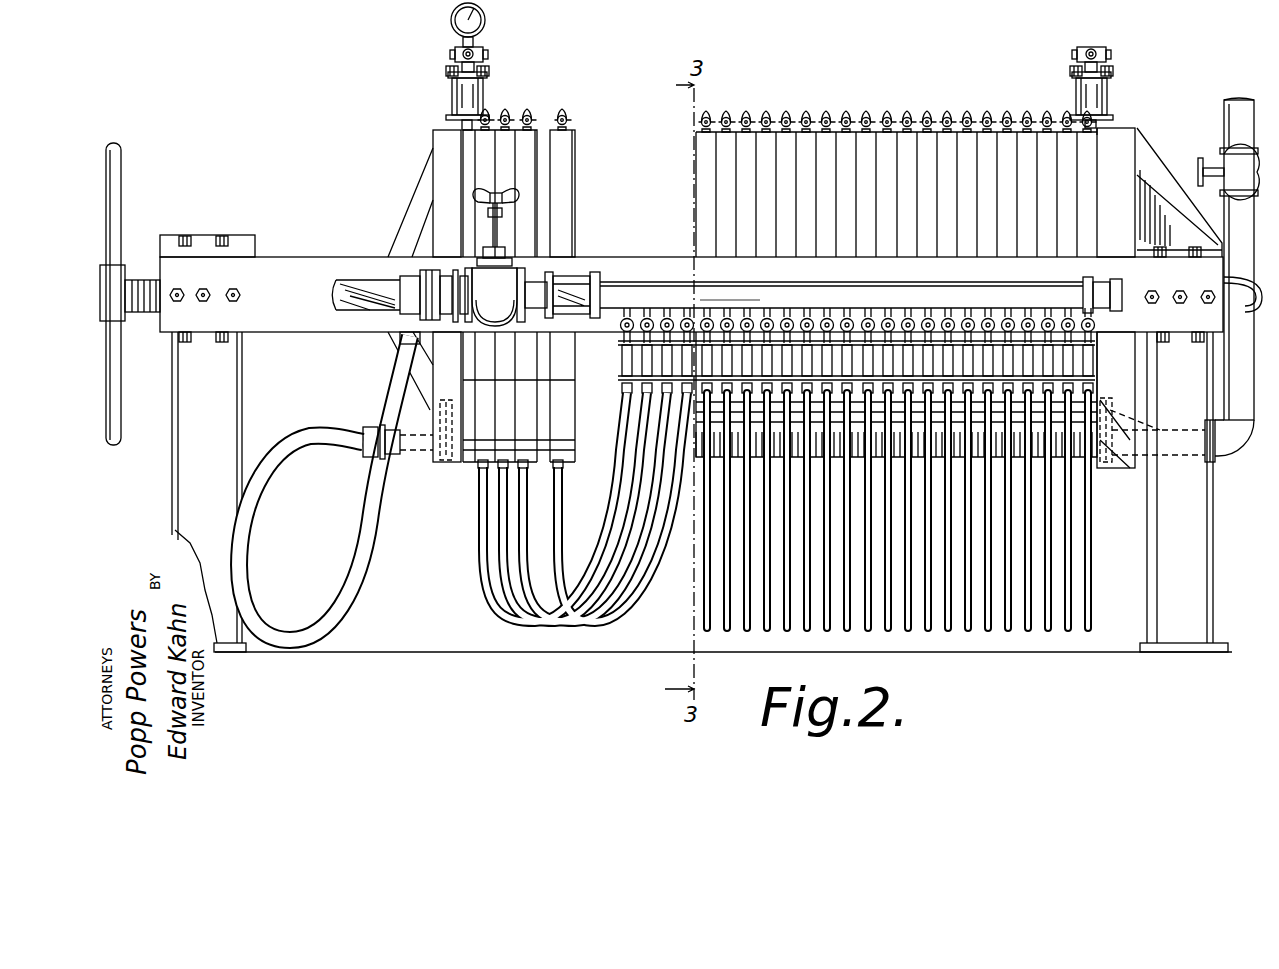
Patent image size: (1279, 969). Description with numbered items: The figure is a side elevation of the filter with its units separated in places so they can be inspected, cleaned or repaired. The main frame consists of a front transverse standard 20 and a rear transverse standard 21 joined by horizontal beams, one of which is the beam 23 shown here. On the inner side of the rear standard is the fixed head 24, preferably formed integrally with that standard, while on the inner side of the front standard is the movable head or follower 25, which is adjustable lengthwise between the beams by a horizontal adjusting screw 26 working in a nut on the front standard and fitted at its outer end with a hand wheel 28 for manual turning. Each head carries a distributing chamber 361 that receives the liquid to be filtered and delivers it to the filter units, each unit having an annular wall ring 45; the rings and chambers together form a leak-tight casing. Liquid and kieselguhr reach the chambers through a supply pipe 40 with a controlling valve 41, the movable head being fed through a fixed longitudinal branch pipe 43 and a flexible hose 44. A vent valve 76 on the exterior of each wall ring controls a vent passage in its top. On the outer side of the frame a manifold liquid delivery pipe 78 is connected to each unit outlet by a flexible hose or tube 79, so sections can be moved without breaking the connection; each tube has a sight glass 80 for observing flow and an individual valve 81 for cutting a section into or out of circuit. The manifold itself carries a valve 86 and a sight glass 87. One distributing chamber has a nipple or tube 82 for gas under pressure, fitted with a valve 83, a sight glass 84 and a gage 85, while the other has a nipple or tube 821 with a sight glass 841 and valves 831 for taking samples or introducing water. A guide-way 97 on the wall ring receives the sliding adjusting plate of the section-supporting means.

The transverse standard 20 is at (209, 492).
The transverse standard 21 is at (1184, 492).
The horizontal beam 23 is at (691, 288).
The fixed head 24 is at (1112, 468).
The movable head or follower 25 is at (436, 466).
The adjusting screw 26 is at (140, 318).
The hand wheel 28 is at (113, 143).
The supply pipe 40 is at (1234, 101).
The controlling valve 41 is at (1238, 175).
The longitudinal branch pipe 43 is at (1232, 392).
The flexible hose 44 is at (283, 614).
The wall ring 45 is at (566, 153).
The vent valve 76 is at (567, 118).
The manifold liquid delivery pipe 78 is at (870, 284).
The flexible hose or tube 79 is at (500, 612).
The sight glass 80 is at (622, 360).
The individual valve 81 is at (748, 285).
The nipple or tube 82 is at (476, 68).
The valve 83 is at (482, 50).
The sight glass 84 is at (462, 90).
The gage 85 is at (451, 22).
The valve 86 is at (495, 297).
The sight glass 87 is at (575, 275).
The guide-way 97 is at (700, 622).
The distributing chamber 361 is at (432, 162).
The nipple or tube 821 is at (1098, 132).
The valve 831 is at (1085, 47).
The sight glass 841 is at (1086, 90).